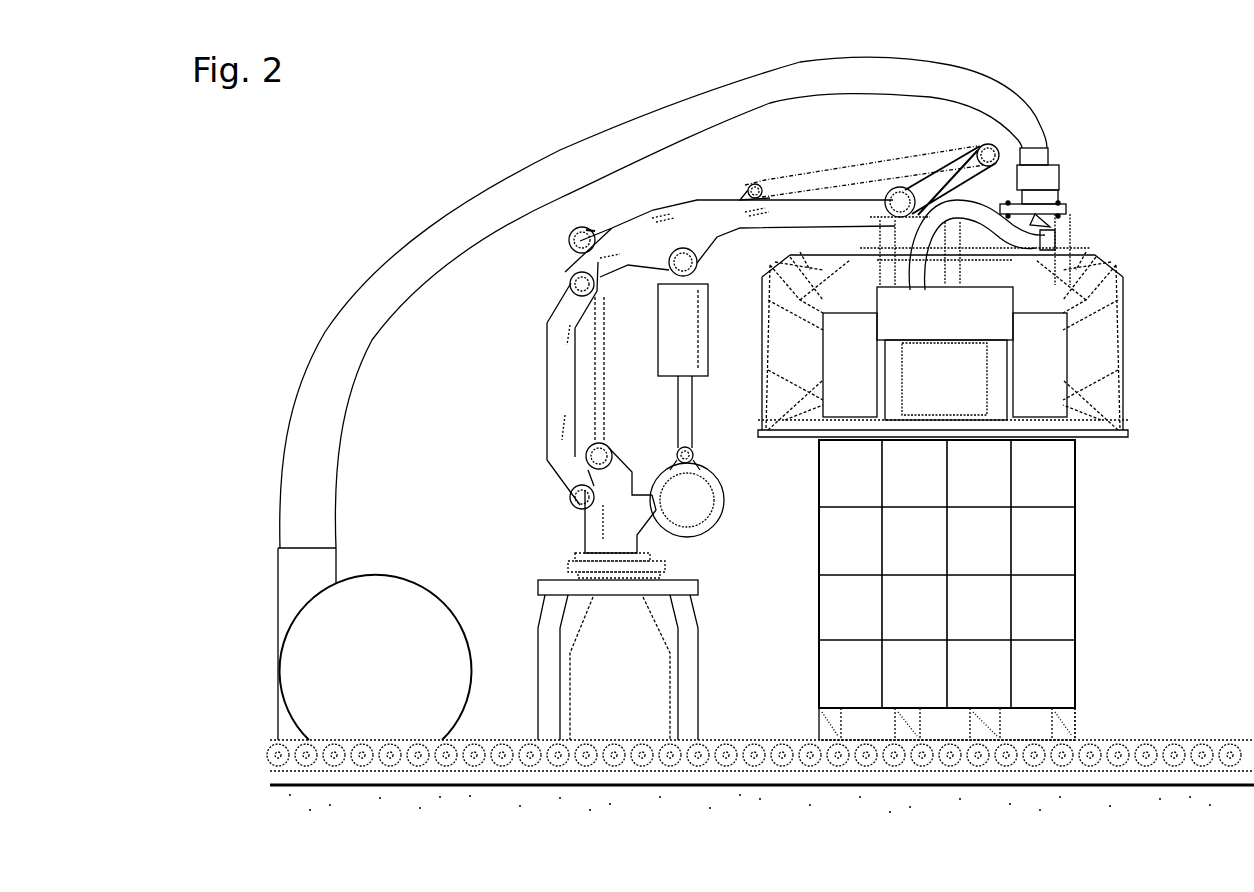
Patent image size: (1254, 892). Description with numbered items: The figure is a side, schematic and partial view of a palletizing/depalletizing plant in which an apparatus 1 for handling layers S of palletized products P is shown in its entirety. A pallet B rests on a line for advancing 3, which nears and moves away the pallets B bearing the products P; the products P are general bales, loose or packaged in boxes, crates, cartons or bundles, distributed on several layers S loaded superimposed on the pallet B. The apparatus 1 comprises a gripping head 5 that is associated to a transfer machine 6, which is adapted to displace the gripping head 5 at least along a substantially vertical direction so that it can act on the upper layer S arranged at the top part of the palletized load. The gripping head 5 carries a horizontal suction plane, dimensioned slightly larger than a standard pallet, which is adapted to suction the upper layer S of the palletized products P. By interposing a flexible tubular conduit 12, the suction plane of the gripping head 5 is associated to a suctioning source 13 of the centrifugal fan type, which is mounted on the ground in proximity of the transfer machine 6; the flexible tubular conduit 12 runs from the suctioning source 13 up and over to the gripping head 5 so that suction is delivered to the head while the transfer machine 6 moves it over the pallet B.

The apparatus for handling layers of palletized products 1 is at (1140, 113).
The line for advancing 3 is at (1090, 748).
The gripping head 5 is at (1140, 380).
The transfer machine 6 is at (667, 238).
The flexible tubular conduit 12 is at (375, 312).
The suctioning source 13 is at (390, 619).
The pallet B is at (816, 724).
The layers S is at (1077, 487).
The products P is at (920, 556).